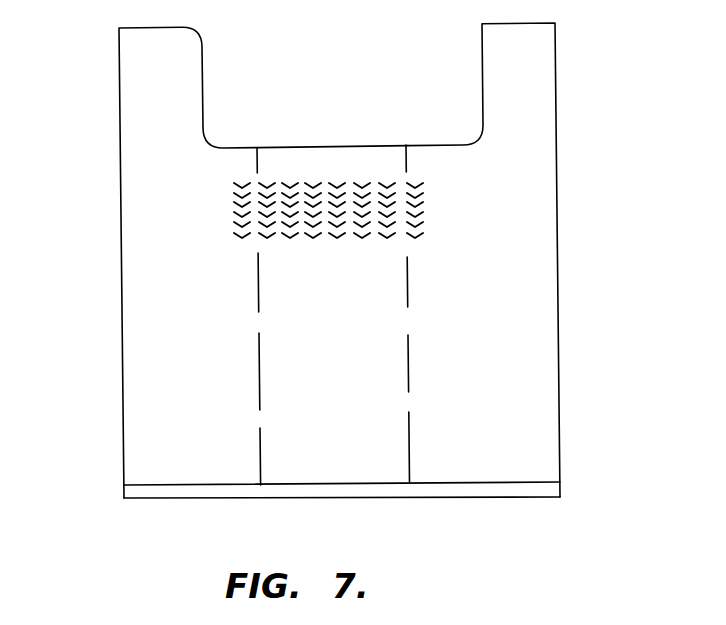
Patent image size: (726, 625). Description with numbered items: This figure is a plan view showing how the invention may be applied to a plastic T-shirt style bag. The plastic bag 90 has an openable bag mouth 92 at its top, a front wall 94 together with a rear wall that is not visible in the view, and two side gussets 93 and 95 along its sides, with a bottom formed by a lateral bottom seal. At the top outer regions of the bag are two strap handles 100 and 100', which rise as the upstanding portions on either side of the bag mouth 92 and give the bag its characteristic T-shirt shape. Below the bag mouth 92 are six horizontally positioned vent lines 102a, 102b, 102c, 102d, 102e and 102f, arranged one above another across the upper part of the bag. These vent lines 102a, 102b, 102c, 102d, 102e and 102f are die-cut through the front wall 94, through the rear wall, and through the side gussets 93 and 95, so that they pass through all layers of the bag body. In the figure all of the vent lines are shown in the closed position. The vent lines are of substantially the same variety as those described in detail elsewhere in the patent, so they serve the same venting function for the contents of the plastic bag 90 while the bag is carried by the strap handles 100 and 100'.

The plastic bag 90 is at (570, 266).
The openable bag mouth 92 is at (367, 146).
The side gusset 93 is at (148, 302).
The front wall 94 is at (357, 408).
The side gusset 95 is at (530, 358).
The strap handle 100 is at (141, 262).
The strap handle 100' is at (533, 260).
The vent line 102a is at (237, 190).
The vent line 102b is at (237, 198).
The vent line 102c is at (235, 208).
The vent line 102d is at (235, 219).
The vent line 102e is at (235, 229).
The vent line 102f is at (237, 242).